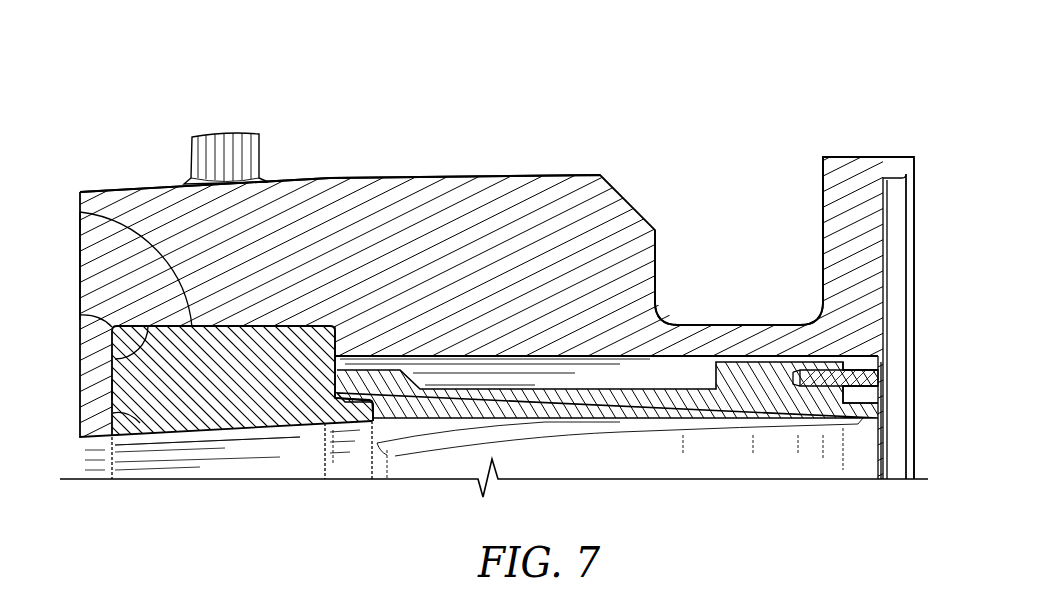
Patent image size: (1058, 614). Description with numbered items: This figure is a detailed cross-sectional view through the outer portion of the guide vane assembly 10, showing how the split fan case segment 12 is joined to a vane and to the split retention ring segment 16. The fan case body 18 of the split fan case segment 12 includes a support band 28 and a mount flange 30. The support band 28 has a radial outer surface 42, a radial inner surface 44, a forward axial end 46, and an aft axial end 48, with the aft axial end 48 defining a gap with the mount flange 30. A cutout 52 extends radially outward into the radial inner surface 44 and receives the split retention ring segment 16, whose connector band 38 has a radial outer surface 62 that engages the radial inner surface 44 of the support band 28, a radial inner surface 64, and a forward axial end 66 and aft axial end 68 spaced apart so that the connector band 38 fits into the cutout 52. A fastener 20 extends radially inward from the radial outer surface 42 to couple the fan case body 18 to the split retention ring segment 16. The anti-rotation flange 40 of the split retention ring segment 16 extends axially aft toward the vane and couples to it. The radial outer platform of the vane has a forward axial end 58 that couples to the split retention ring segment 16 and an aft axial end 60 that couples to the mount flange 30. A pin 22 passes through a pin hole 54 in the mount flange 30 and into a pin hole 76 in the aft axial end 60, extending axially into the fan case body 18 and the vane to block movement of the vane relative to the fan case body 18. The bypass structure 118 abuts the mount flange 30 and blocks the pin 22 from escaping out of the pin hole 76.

The guide vane assembly 10 is at (116, 74).
The split fan case segment 12 is at (74, 184).
The split retention ring segment 16 is at (123, 485).
The fan case body 18 is at (349, 130).
The fastener 20 is at (192, 162).
The pin 22 is at (882, 405).
The support band 28 is at (412, 180).
The mount flange 30 is at (860, 160).
The connector band 38 is at (160, 424).
The anti-rotation flange 40 is at (337, 414).
The radial outer surface 42 is at (133, 188).
The radial inner surface 44 is at (80, 212).
The forward axial end 46 is at (80, 298).
The aft axial end 48 is at (660, 278).
The cutout 52 is at (80, 316).
The pin hole 54 is at (873, 362).
The forward axial end 58 is at (392, 434).
The aft axial end 60 is at (867, 462).
The radial outer surface 62 is at (112, 356).
The radial inner surface 64 is at (112, 414).
The forward axial end 66 is at (112, 392).
The aft axial end 68 is at (330, 362).
The pin hole 76 is at (824, 390).
The bypass structure 118 is at (914, 298).